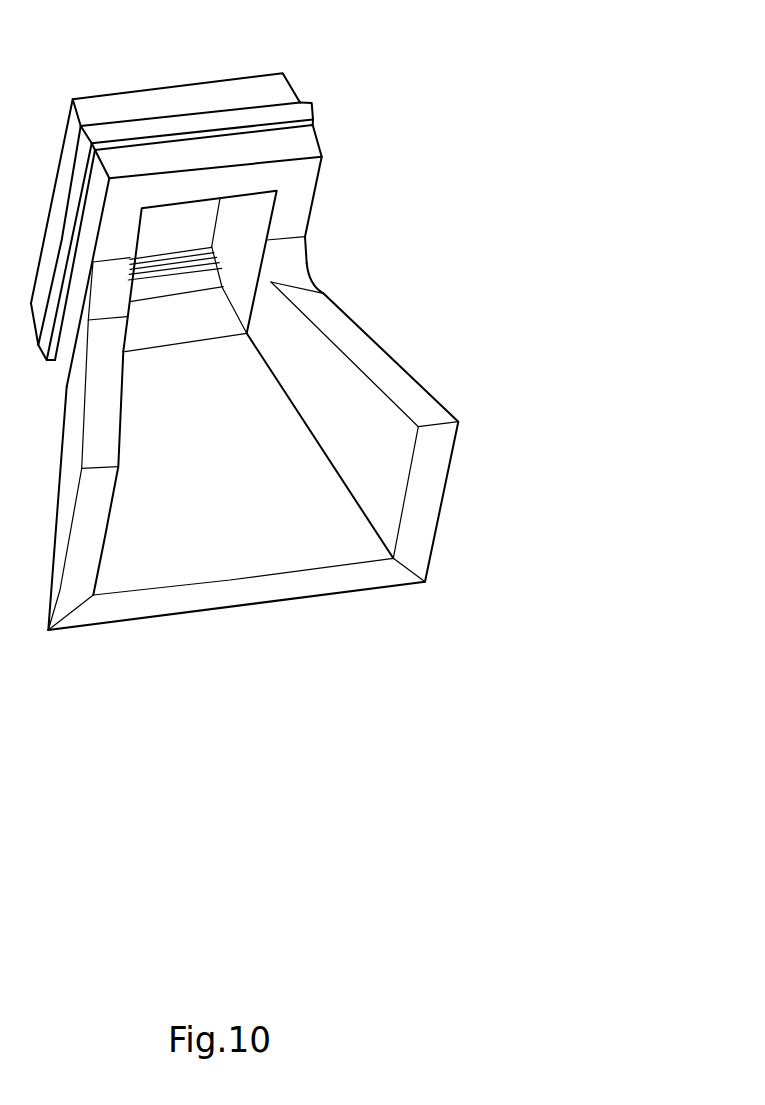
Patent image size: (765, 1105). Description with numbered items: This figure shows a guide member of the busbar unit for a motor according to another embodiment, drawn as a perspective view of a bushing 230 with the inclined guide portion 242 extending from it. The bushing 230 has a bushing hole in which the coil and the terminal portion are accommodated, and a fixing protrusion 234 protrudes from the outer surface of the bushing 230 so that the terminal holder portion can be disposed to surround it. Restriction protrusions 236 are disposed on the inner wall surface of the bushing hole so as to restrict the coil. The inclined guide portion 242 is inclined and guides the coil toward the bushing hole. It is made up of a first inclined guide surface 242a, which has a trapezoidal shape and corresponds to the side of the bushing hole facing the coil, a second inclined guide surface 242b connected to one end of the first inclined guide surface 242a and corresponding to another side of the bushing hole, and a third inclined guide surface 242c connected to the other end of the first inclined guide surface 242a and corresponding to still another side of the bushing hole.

The bushing 230 is at (220, 98).
The fixing protrusion 234 is at (300, 110).
The restriction protrusion 236 is at (268, 258).
The inclined guide portion 242 is at (253, 517).
The first inclined guide surface 242a is at (282, 547).
The second inclined guide surface 242b is at (387, 477).
The third inclined guide surface 242c is at (89, 485).